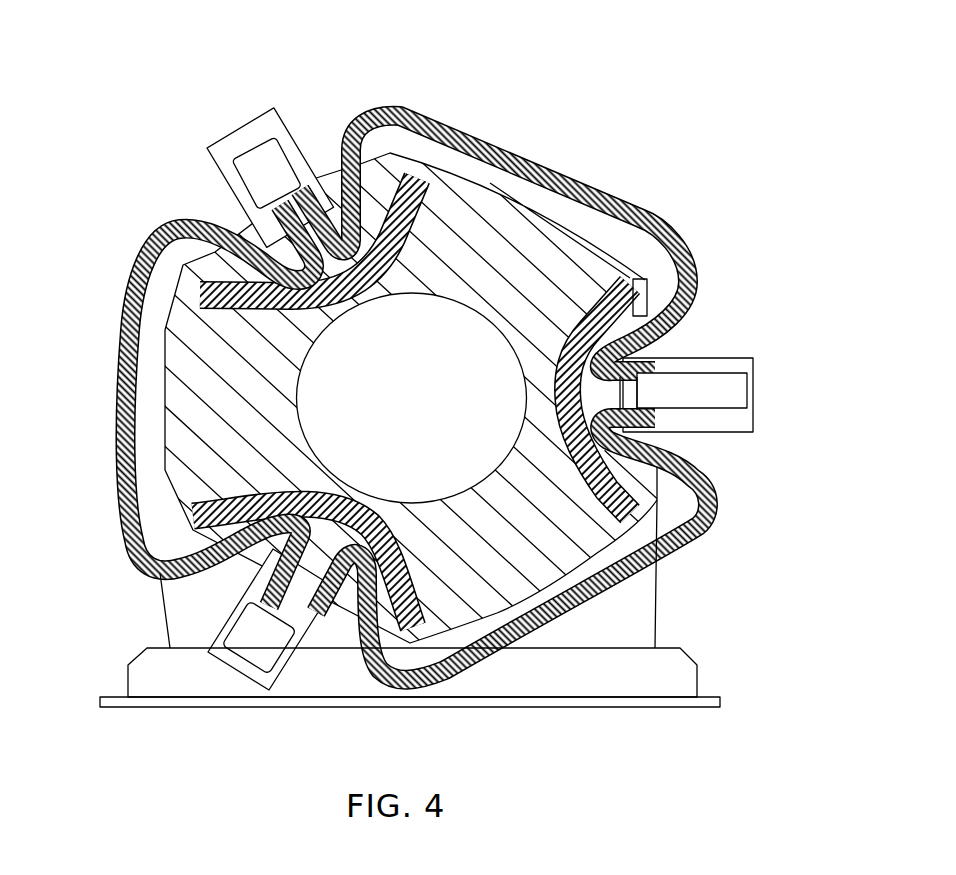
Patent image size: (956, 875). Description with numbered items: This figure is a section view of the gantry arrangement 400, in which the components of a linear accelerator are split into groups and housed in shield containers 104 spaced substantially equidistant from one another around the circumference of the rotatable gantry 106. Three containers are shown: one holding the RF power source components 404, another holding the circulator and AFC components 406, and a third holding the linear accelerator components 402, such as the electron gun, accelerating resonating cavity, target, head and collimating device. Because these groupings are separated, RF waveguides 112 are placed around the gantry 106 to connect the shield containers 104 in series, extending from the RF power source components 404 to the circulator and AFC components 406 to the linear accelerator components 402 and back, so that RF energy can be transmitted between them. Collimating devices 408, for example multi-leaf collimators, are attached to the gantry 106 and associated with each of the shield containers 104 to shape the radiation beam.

The transformer assembly 400 is at (140, 84).
The shield container 104 is at (276, 110).
The gantry 106 is at (287, 424).
The waveguide 112 is at (540, 157).
The linear accelerator components 402 is at (712, 404).
The RF power source components 404 is at (286, 182).
The circulator and AFC components 406 is at (282, 649).
The collimating device 408 is at (200, 287).